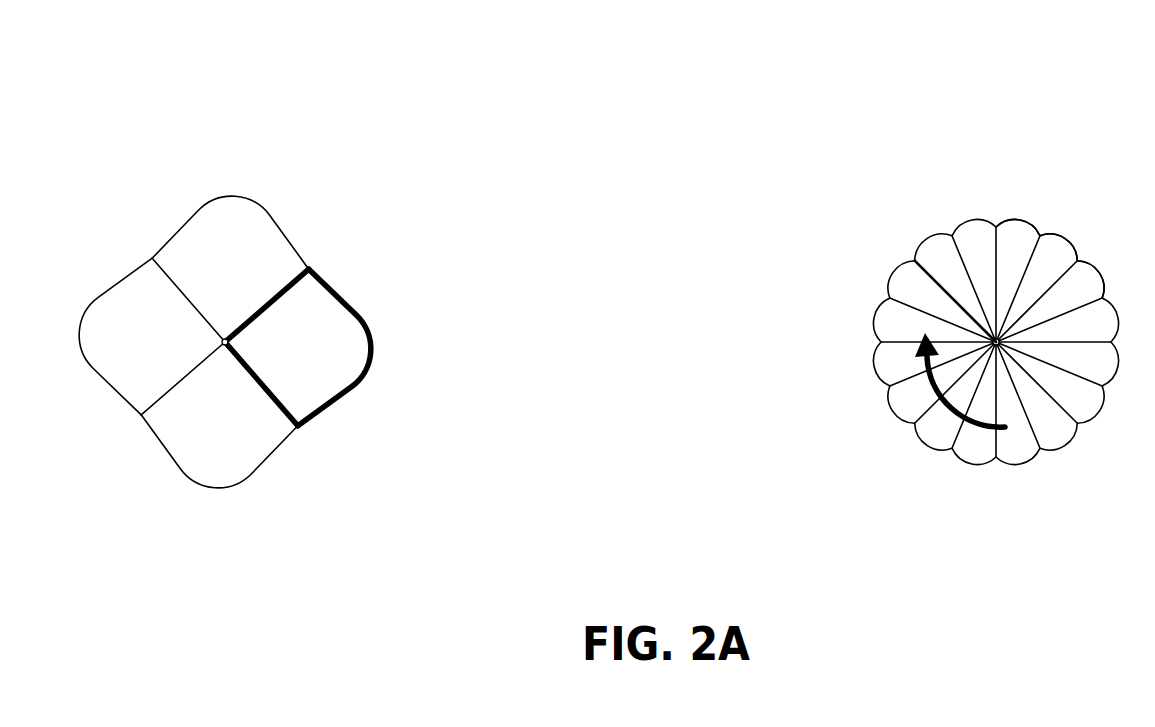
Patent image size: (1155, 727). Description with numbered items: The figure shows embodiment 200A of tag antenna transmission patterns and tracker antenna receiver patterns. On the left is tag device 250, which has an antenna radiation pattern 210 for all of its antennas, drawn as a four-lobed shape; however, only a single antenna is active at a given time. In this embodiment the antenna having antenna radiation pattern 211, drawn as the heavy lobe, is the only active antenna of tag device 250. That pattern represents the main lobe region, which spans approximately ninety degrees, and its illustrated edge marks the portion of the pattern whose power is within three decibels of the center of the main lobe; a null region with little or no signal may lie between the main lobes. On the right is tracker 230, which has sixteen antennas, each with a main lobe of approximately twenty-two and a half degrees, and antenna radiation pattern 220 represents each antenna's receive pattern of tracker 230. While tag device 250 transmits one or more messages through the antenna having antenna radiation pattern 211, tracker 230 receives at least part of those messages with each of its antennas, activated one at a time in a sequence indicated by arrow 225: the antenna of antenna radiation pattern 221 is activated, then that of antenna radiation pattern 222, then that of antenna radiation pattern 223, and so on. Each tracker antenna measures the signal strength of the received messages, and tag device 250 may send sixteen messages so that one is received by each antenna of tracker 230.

The embodiment 200A is at (122, 83).
The antenna radiation pattern 210 is at (118, 211).
The antenna radiation pattern 211 is at (343, 290).
The tag device 250 is at (224, 338).
The antenna radiation pattern 220 is at (912, 188).
The antenna radiation pattern 221 is at (1010, 220).
The antenna radiation pattern 222 is at (1048, 230).
The antenna radiation pattern 223 is at (1092, 262).
The arrow 225 is at (935, 395).
The tracker 230 is at (914, 261).